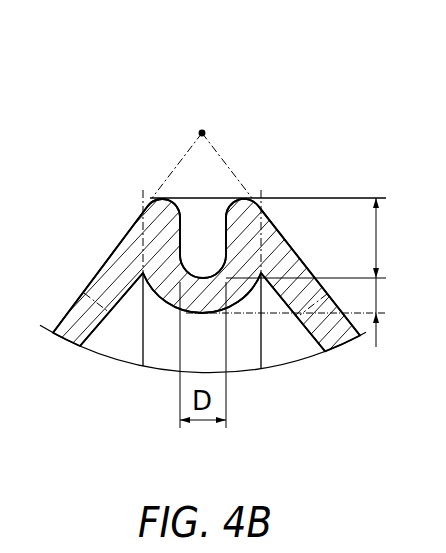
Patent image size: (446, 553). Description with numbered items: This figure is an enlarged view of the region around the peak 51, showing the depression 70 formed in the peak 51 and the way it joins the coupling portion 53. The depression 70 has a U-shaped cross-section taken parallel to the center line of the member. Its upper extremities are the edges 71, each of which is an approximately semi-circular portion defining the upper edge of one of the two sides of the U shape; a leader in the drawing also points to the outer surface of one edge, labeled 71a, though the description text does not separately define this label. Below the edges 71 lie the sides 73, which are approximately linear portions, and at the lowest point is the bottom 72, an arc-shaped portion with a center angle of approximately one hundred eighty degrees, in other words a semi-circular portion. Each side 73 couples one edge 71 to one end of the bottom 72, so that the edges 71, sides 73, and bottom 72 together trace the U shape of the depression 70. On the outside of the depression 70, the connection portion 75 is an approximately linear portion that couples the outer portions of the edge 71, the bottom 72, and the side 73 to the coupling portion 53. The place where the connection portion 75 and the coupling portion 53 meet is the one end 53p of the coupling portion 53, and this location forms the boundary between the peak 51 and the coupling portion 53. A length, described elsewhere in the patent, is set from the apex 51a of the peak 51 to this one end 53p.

The peak 51 is at (358, 173).
The apex 51a is at (202, 132).
The coupling portion 53 is at (60, 315).
The one end of the coupling portion 53p is at (84, 293).
The depression 70 is at (205, 187).
The edges 71 is at (158, 200).
The outer surface of tip portion 71a is at (147, 205).
The bottom 72 is at (184, 313).
The sides 73 is at (187, 222).
The connection portion 75 is at (118, 249).